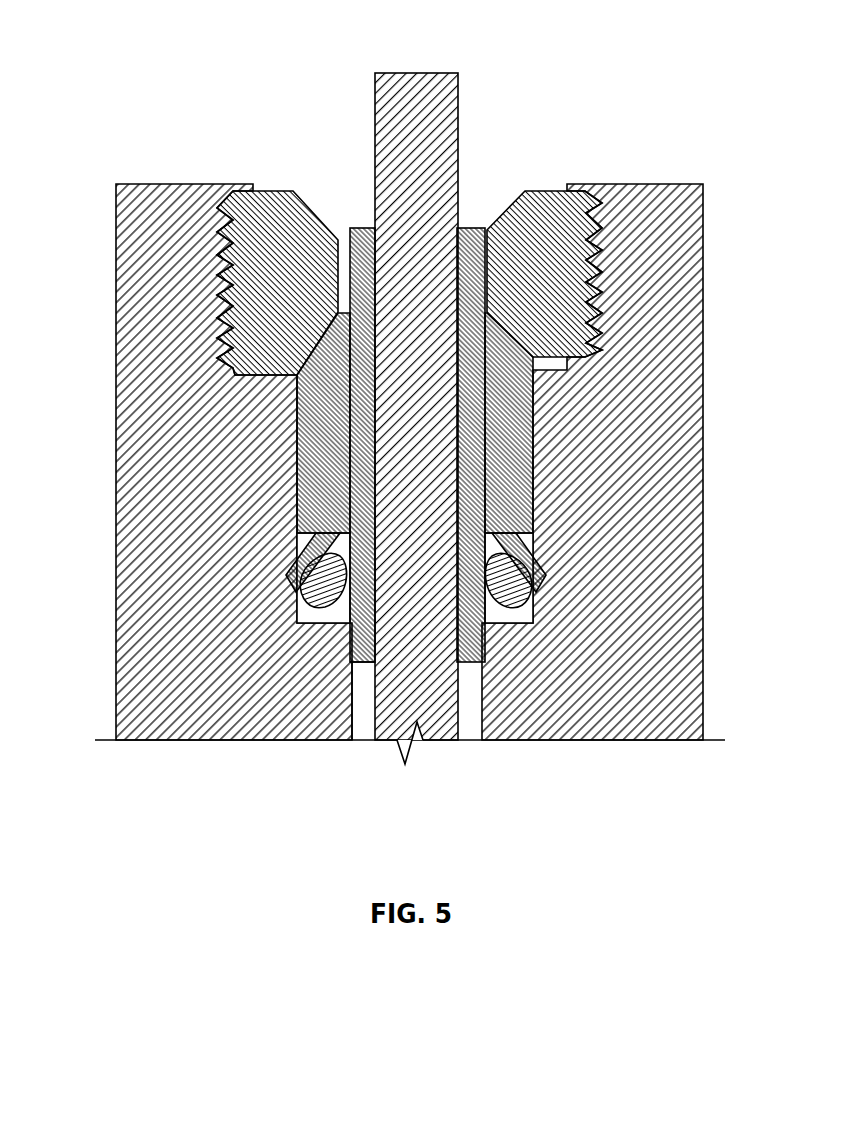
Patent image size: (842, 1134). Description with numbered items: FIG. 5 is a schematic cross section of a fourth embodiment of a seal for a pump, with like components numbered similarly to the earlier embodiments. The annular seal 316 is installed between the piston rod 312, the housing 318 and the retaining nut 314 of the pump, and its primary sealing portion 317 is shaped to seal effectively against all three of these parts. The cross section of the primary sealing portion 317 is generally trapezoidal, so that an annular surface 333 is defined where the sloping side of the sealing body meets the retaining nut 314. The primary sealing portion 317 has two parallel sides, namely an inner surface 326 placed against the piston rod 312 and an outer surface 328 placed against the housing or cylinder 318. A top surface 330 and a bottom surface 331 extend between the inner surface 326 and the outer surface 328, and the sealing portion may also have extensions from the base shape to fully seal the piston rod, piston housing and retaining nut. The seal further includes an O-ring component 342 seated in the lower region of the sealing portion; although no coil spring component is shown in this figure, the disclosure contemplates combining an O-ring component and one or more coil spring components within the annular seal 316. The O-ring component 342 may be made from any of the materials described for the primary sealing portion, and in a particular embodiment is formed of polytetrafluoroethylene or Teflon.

The piston rod 312 is at (415, 73).
The retaining nut 314 is at (543, 200).
The annular seal 316 is at (260, 418).
The primary sealing portion 317 is at (500, 488).
The housing 318 is at (652, 185).
The inner surface 326 is at (457, 442).
The outer surface 328 is at (297, 478).
The top surface 330 is at (363, 228).
The bottom surface 331 is at (360, 690).
The annular surface 333 is at (338, 327).
The O-ring component 342 is at (507, 607).